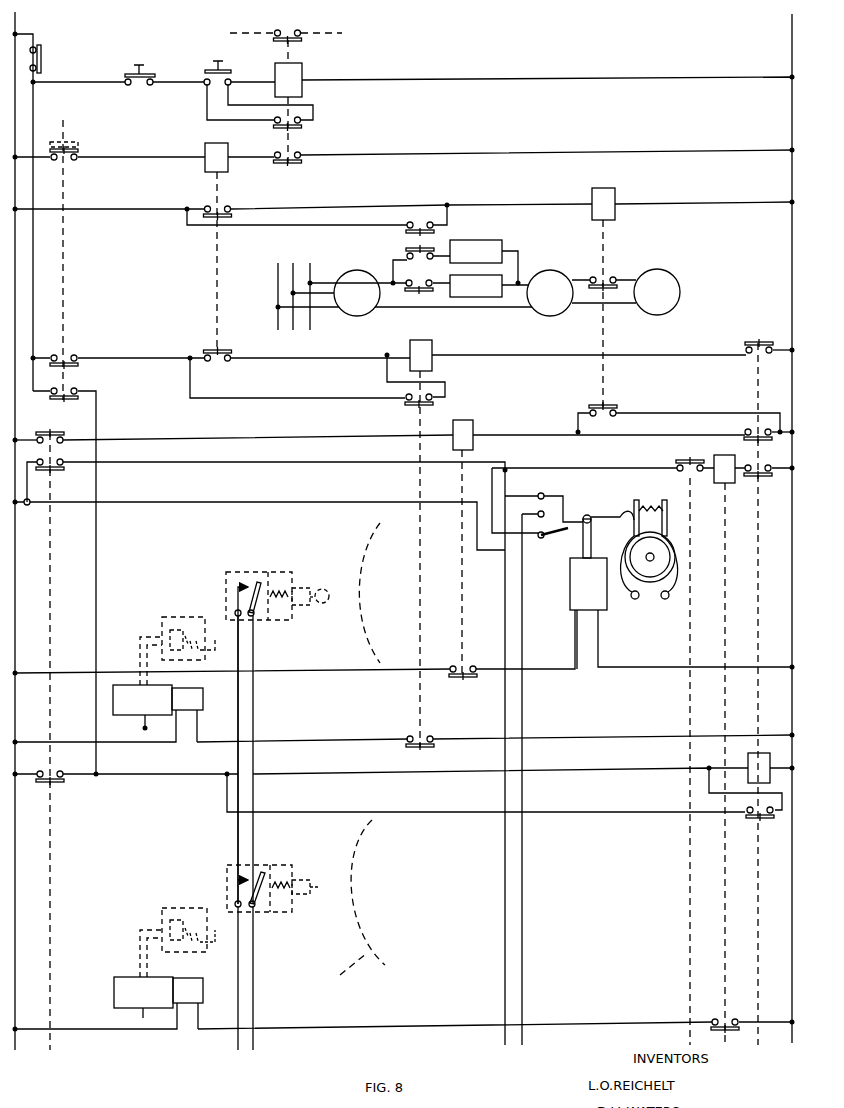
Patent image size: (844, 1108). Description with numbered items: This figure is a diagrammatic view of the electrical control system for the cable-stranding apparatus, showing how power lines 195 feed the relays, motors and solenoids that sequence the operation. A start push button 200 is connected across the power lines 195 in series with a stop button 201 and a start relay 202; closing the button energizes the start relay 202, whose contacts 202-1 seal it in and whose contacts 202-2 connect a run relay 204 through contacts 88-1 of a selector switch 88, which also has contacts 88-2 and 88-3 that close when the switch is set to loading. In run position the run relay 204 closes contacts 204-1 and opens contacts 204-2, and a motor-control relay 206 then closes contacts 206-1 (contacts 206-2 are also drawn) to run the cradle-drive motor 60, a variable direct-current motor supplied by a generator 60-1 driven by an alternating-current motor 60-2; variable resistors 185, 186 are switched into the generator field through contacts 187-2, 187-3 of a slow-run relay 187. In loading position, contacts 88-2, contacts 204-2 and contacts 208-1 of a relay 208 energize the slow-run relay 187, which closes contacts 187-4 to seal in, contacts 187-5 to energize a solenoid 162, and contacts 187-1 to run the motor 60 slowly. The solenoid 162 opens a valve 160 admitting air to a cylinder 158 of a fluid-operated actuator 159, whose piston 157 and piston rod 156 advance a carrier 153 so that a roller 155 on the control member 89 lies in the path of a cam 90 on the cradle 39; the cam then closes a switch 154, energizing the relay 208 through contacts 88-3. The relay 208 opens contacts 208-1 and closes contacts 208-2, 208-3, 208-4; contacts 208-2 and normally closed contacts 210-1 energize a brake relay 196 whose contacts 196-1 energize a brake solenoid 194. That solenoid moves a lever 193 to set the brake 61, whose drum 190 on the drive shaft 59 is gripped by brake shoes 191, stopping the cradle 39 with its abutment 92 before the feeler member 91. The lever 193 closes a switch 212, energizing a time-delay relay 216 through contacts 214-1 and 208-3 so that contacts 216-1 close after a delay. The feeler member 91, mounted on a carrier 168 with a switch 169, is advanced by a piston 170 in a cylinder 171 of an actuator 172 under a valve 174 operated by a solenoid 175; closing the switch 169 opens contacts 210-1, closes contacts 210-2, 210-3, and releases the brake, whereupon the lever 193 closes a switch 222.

The power lines 195 is at (18, 30).
The start push button 200 is at (182, 48).
The stop button 201 is at (108, 73).
The start relay 202 is at (302, 72).
The relay contacts 202-1 is at (305, 124).
The relay contacts 202-2 is at (305, 162).
The selector switch 88 is at (69, 137).
The contacts 88-1 is at (77, 162).
The contacts 88-2 is at (72, 350).
The contacts 88-3 is at (78, 386).
The run relay 204 is at (228, 160).
The contacts 204-1 is at (227, 213).
The contacts 204-2 is at (230, 362).
The motor-control relay 206 is at (616, 210).
The contacts 206-1 is at (610, 272).
The contacts 206-2 is at (612, 405).
The cradle-drive motor 60 is at (680, 282).
The D.C. generator 60-1 is at (548, 314).
The alternating current motor 60-2 is at (355, 315).
The variable resistor 185 is at (503, 240).
The variable resistor 186 is at (505, 278).
The slow-run relay 187 is at (410, 346).
The contacts 187-1 is at (410, 222).
The contacts 187-2 is at (396, 264).
The contacts 187-3 is at (430, 295).
The contacts 187-4 is at (405, 404).
The contacts 187-5 is at (408, 746).
The brake relay 196 is at (480, 427).
The contacts 196-1 is at (446, 680).
The relay 208 is at (748, 762).
The contacts 208-1 is at (752, 358).
The contacts 208-2 is at (748, 443).
The contacts 208-3 is at (720, 573).
The contacts 208-4 is at (752, 818).
The contacts 210-1 is at (80, 435).
The contacts 210-2 is at (68, 472).
The contacts 210-3 is at (75, 782).
The contacts 214-1 is at (678, 462).
The time-delay relay 216 is at (714, 470).
The contacts 216-1 is at (712, 1026).
The brake 61 is at (680, 497).
The switch 222 is at (544, 762).
The lever 193 is at (593, 512).
The drive shaft 59 is at (646, 556).
The switch 212 is at (561, 548).
The solenoid 194 is at (582, 600).
The brake drum 190 is at (655, 598).
The brake shoes 191 is at (628, 605).
The cradle 39 is at (355, 750).
The cam 90 is at (358, 568).
The control member 89 is at (292, 605).
The switch 154 is at (256, 580).
The carrier 153 is at (257, 626).
The roller 155 is at (325, 604).
The piston rod 156 is at (213, 634).
The piston 157 is at (160, 636).
The cylinder 158 is at (166, 618).
The fluid-operated actuator 159 is at (177, 611).
The valve 160 is at (125, 718).
The solenoid 162 is at (188, 712).
The carrier 168 is at (249, 868).
The switch 169 is at (248, 878).
The piston 170 is at (178, 908).
The cylinder 171 is at (160, 920).
The fluid-operated actuator 172 is at (193, 904).
The valve 174 is at (128, 995).
The solenoid 175 is at (195, 985).
The projecting abutment 92 is at (317, 900).
The feeler member 91 is at (320, 888).